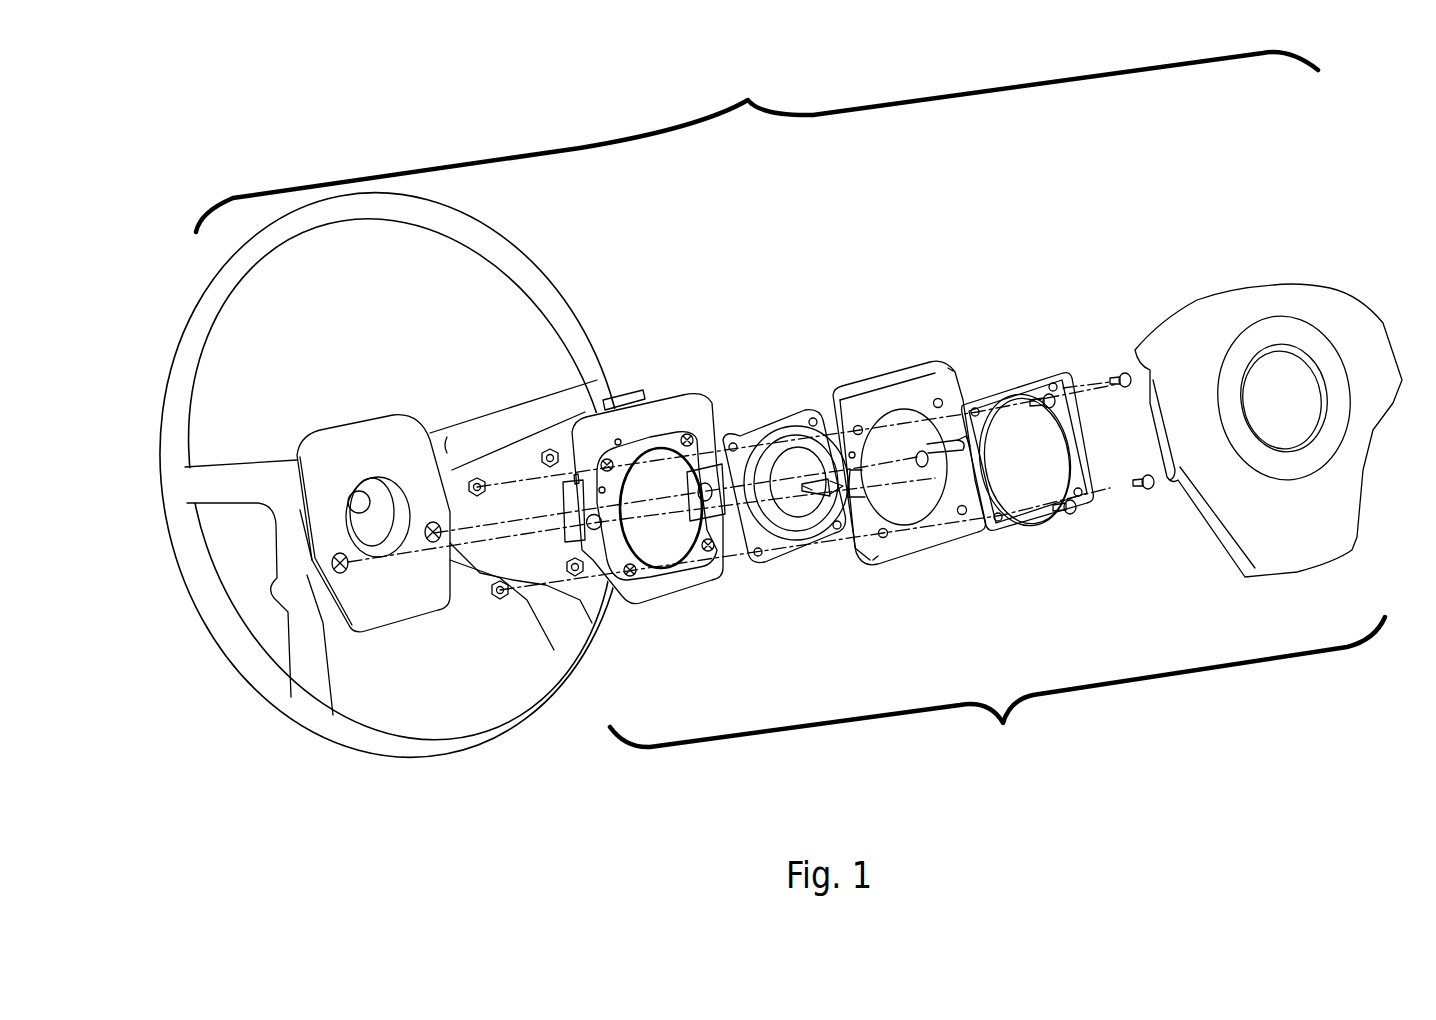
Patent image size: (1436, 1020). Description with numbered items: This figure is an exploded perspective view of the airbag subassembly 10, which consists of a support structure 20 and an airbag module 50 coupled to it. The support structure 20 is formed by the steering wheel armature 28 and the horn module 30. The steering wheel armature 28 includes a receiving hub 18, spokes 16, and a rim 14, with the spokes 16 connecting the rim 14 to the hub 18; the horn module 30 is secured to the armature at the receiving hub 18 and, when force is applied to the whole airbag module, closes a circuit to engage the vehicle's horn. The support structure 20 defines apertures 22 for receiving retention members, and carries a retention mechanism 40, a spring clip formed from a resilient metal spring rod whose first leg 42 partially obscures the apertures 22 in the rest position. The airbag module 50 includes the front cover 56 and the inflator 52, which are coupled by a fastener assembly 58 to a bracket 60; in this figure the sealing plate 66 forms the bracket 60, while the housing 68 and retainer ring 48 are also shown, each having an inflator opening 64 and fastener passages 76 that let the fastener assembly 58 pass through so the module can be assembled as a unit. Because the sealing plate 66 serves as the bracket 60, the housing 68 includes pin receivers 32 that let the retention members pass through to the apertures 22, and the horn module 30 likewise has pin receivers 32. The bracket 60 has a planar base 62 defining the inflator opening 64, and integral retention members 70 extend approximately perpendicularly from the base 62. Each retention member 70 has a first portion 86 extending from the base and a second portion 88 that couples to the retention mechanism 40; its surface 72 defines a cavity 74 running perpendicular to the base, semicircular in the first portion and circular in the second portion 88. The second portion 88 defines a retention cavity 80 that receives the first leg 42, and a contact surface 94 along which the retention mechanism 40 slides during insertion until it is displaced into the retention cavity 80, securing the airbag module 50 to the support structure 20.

The airbag subassembly 10 is at (757, 142).
The rim 14 is at (397, 486).
The spokes 16 is at (513, 417).
The receiving hub 18 is at (288, 470).
The support structure 20 is at (390, 588).
The apertures 22 is at (330, 562).
The steering wheel armature 28 is at (518, 707).
The horn module 30 is at (383, 435).
The pin receivers 32 is at (593, 530).
The retention mechanism 40 is at (340, 570).
The first leg 42 is at (434, 542).
The retainer ring 48 is at (1047, 533).
The airbag module 50 is at (997, 686).
The inflator 52 is at (825, 482).
The front cover 56 is at (1340, 502).
The fastener assembly 58 is at (490, 480).
The bracket 60 is at (883, 555).
The base 62 is at (943, 367).
The inflator opening 64 is at (678, 542).
The sealing plate 66 is at (935, 457).
The housing 68 is at (838, 483).
The retention members 70 is at (809, 500).
The surface 72 is at (830, 482).
The cavity 74 is at (845, 492).
The fastener passages 76 is at (632, 576).
The retention cavity 80 is at (952, 458).
The first portion 86 is at (960, 458).
The second portion 88 is at (807, 488).
The contact surface 94 is at (925, 470).